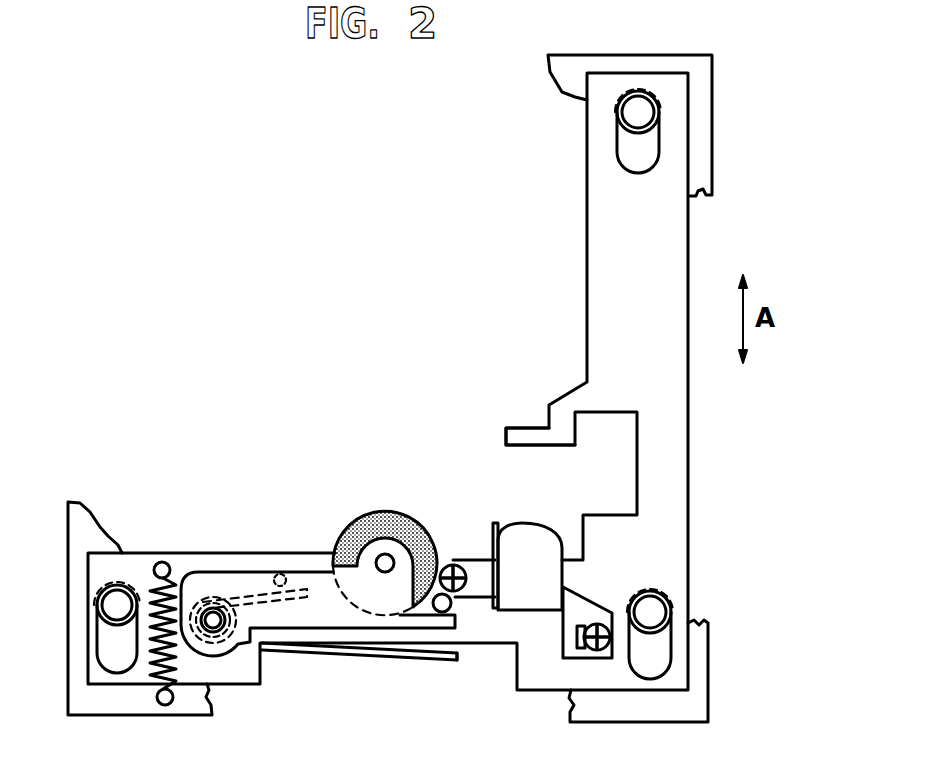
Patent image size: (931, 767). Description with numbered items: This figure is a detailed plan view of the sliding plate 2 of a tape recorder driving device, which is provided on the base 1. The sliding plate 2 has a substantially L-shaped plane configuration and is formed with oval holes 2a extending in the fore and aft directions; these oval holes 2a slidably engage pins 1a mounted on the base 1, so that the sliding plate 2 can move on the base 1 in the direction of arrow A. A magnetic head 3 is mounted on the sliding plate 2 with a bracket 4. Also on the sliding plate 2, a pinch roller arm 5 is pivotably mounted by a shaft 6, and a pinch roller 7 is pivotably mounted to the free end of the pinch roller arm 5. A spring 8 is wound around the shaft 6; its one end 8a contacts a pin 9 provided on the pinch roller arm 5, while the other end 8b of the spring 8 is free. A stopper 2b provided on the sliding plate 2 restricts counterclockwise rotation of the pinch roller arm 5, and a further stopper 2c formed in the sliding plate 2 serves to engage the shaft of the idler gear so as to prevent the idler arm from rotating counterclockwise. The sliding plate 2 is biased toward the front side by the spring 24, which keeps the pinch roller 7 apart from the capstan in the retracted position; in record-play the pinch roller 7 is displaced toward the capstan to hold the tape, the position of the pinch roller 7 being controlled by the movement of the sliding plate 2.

The base 1 is at (700, 108).
The pins 1a is at (643, 113).
The sliding plate 2 is at (672, 140).
The oval holes 2a is at (652, 165).
The stopper 2b is at (447, 608).
The stopper 2c is at (526, 430).
The magnetic head 3 is at (532, 552).
The bracket 4 is at (460, 565).
The pinch roller arm 5 is at (322, 575).
The shaft 6 is at (212, 617).
The pinch roller 7 is at (385, 518).
The spring 8 is at (300, 655).
The one end of the spring 8a is at (209, 603).
The other end of the spring 8b is at (442, 657).
The pin 9 is at (280, 574).
The spring 24 is at (152, 662).